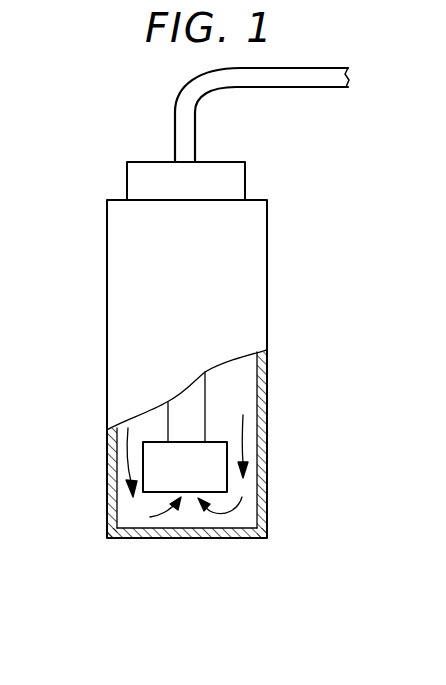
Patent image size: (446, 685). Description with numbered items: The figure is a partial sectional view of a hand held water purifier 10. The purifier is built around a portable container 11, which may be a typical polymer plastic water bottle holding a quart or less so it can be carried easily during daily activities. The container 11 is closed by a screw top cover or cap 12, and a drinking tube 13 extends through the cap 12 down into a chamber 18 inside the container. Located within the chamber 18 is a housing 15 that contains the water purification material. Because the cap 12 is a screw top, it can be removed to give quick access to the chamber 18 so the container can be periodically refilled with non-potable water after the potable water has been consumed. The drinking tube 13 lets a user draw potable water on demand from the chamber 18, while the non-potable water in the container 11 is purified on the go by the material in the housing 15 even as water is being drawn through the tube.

The hand held water purifier 10 is at (304, 257).
The portable container 11 is at (245, 307).
The cap 12 is at (235, 183).
The drinking tube 13 is at (300, 73).
The housing 15 is at (160, 472).
The chamber 18 is at (233, 402).